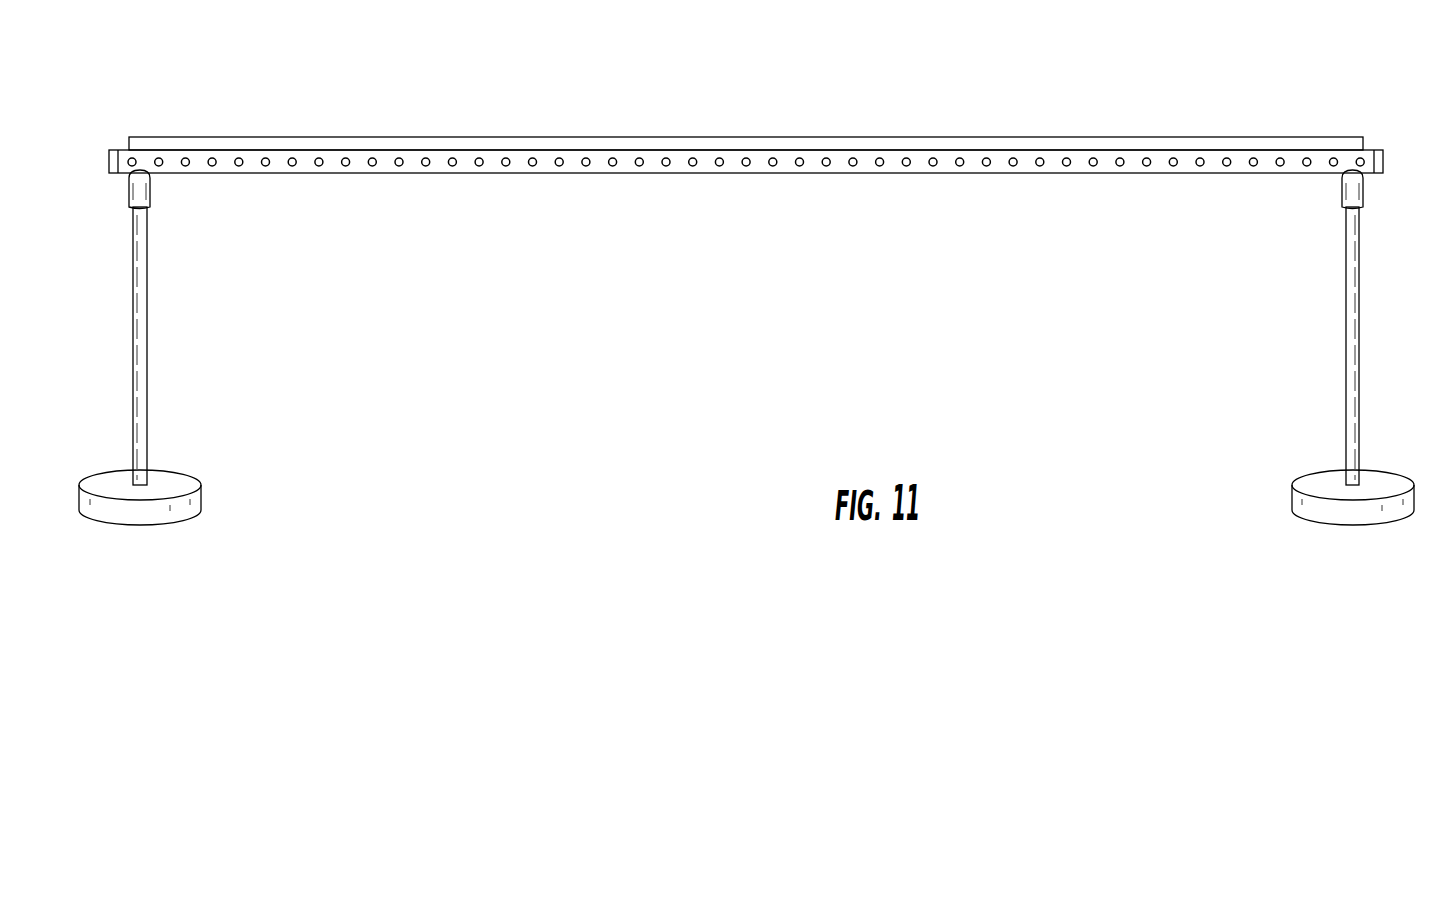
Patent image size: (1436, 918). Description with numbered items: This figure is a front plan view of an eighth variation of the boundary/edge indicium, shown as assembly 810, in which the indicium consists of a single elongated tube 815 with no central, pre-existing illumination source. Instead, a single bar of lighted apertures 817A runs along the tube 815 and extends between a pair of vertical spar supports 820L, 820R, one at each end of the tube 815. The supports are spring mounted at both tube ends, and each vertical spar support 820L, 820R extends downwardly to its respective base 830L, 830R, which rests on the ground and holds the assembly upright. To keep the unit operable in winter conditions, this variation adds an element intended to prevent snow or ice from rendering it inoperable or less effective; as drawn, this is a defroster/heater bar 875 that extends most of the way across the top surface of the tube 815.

The tripod jump bar assembly 810 is at (571, 60).
The defroster/heater bar 875 is at (480, 137).
The elongated tube 815 is at (340, 172).
The lighted apertures 817A is at (293, 157).
The vertical spar support 820L is at (147, 360).
The vertical spar support 820R is at (1346, 364).
The base 830L is at (200, 495).
The base 830R is at (1292, 494).